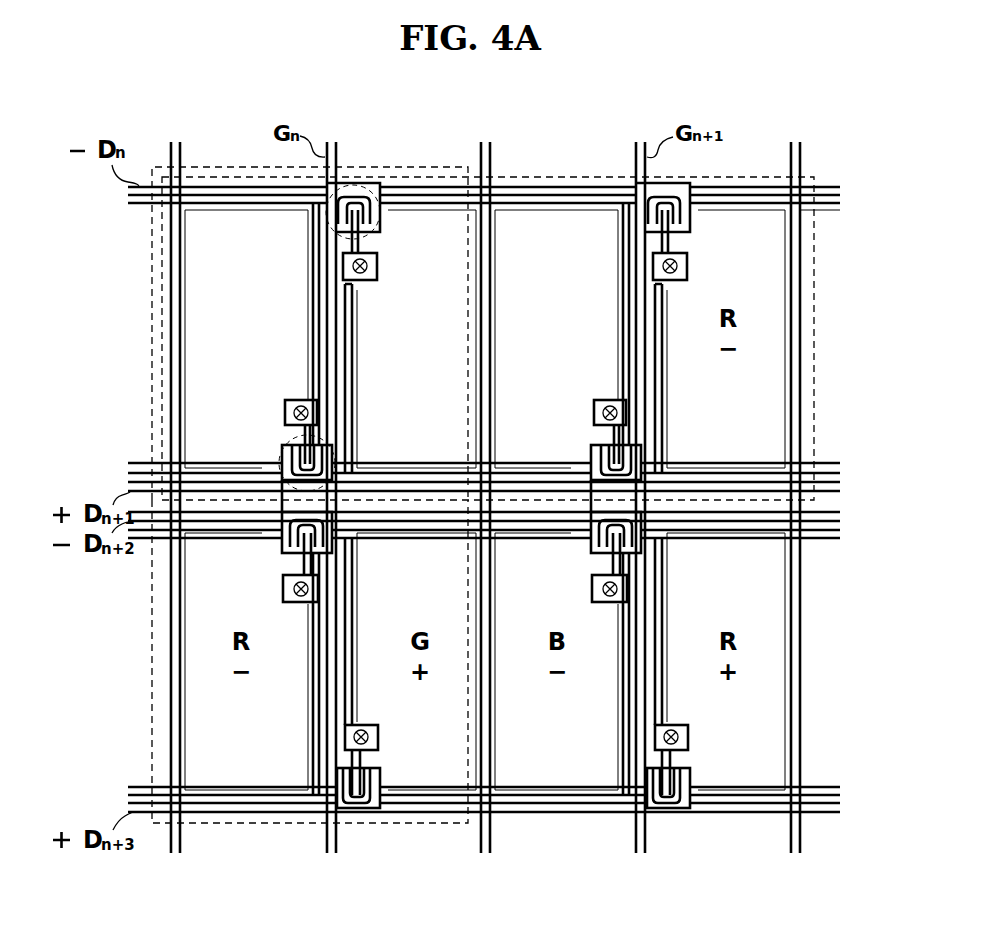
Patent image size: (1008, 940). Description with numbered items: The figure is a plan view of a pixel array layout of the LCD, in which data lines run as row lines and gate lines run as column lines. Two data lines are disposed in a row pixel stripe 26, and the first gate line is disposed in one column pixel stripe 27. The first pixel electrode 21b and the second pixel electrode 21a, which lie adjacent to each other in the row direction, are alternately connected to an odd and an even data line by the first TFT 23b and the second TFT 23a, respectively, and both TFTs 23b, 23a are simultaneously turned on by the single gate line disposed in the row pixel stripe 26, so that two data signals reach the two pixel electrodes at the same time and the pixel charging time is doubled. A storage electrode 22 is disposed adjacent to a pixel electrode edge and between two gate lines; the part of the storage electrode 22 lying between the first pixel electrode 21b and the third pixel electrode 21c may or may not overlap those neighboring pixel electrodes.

The second pixel electrode 21a is at (261, 258).
The first pixel electrode 21b is at (441, 258).
The third pixel electrode 21c is at (580, 258).
The storage electrode 22 is at (486, 163).
The second TFT 23a is at (279, 450).
The first TFT 23b is at (354, 185).
The row pixel stripe 26 is at (816, 314).
The column pixel stripe 27 is at (387, 824).